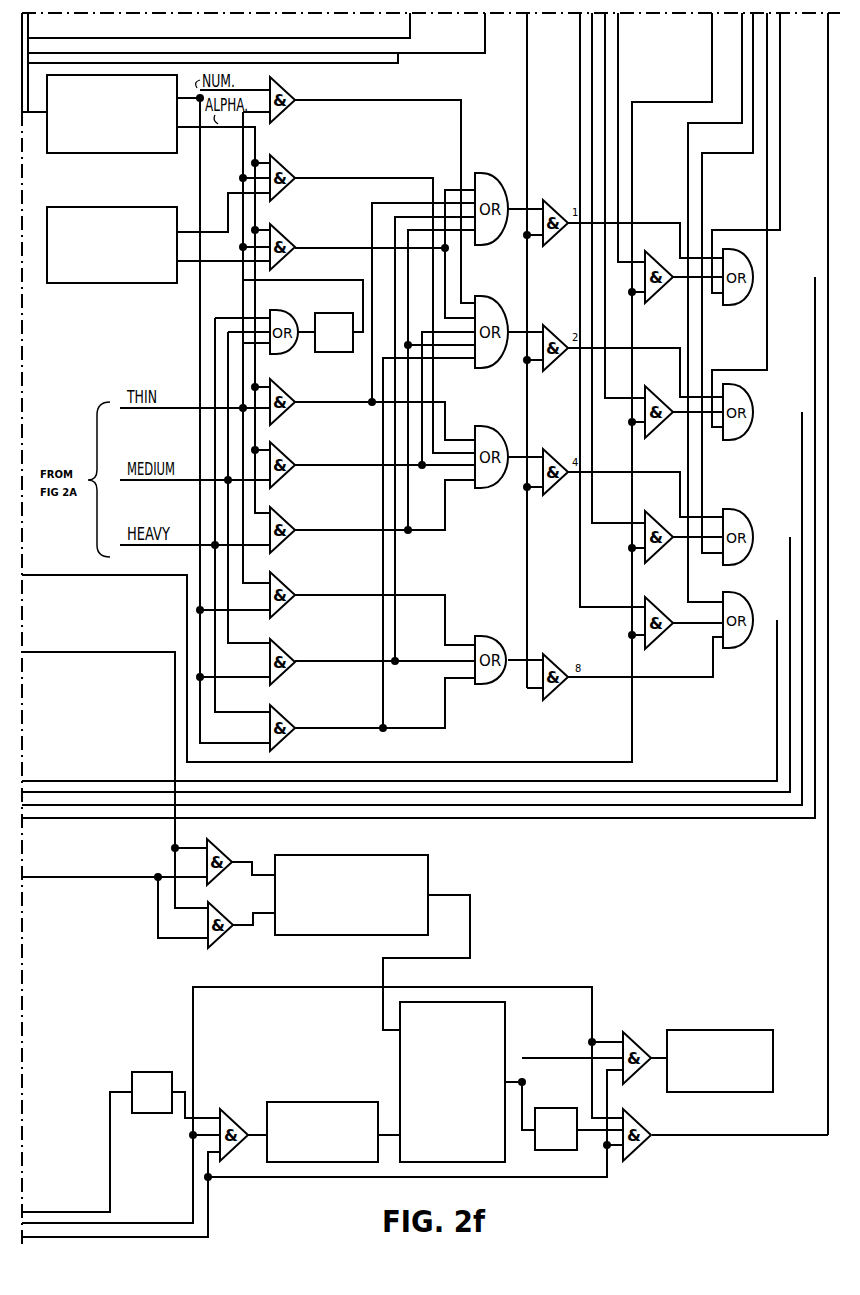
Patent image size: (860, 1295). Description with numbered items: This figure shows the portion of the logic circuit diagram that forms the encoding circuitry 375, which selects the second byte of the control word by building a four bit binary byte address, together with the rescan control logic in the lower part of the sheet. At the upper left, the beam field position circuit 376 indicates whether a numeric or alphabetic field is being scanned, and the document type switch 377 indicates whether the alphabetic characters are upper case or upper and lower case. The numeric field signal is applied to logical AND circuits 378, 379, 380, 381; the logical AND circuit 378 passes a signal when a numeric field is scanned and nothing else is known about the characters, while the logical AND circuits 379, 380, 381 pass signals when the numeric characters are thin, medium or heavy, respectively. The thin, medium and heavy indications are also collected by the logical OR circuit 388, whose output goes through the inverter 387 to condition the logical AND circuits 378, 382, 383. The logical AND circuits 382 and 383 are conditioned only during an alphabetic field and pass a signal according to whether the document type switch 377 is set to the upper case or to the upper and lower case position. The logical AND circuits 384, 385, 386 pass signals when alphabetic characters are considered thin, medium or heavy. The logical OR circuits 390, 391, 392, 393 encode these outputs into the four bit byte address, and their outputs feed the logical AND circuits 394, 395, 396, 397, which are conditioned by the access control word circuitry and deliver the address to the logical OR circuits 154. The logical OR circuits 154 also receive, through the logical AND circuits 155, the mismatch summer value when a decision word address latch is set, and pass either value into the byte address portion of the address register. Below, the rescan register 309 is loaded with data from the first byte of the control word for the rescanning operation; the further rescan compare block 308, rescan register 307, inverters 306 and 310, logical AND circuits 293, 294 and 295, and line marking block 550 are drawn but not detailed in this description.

The encoding circuitry 375 is at (496, 166).
The beam field position circuit 376 is at (135, 153).
The document type switch 377 is at (105, 283).
The logical AND circuit 378 is at (299, 92).
The logical AND circuit 379 is at (288, 605).
The logical AND circuit 380 is at (289, 672).
The logical AND circuit 381 is at (291, 742).
The logical AND circuit 382 is at (290, 160).
The logical AND circuit 383 is at (295, 259).
The logical AND circuit 384 is at (287, 416).
The logical AND circuit 385 is at (287, 478).
The logical AND circuit 386 is at (288, 542).
The inverter 387 is at (325, 353).
The logical OR circuit 388 is at (278, 310).
The logical OR circuit 390 is at (495, 246).
The logical OR circuit 391 is at (507, 365).
The logical OR circuit 392 is at (497, 490).
The logical OR circuit 393 is at (487, 686).
The logical AND circuit 394 is at (555, 248).
The logical AND circuit 395 is at (559, 372).
The logical AND circuit 396 is at (557, 498).
The logical AND circuit 397 is at (558, 700).
The logical AND circuits 155 is at (662, 302).
The logical OR circuits 154 is at (735, 305).
The rescan register 309 is at (430, 869).
The rescan compare 308 is at (505, 1022).
The inverter 306 is at (150, 1072).
The AND gate 293 is at (228, 1108).
The rescan register 307 is at (306, 1102).
The inverter 310 is at (555, 1108).
The AND gate 295 is at (630, 1032).
The AND gate 294 is at (652, 1126).
The line marking 550 is at (752, 1030).